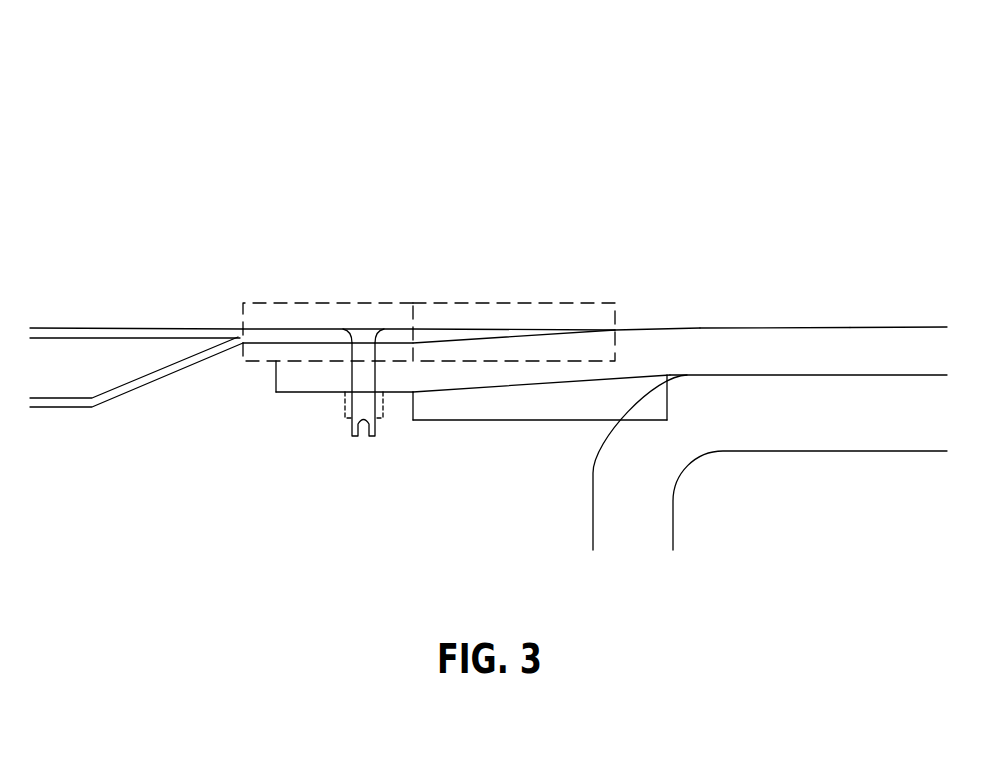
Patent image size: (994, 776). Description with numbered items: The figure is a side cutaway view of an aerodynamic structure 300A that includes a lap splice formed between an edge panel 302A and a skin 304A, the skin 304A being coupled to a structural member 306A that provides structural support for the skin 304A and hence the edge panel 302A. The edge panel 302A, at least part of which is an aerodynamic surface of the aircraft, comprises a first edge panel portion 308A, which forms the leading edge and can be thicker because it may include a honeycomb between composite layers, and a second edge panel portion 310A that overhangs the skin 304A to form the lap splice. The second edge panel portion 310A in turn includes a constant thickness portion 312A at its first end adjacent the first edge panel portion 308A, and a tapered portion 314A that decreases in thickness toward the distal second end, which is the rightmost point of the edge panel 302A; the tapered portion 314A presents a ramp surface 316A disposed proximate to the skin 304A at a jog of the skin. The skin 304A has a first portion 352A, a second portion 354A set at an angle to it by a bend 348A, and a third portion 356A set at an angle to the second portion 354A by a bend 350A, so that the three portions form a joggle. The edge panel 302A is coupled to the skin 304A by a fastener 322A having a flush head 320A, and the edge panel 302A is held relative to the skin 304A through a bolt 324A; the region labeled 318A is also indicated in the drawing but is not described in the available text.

The aerodynamic structure 300A is at (228, 86).
The edge panel 302A is at (207, 327).
The skin 304A is at (753, 327).
The structural member 306A is at (850, 452).
The first edge panel portion 308A is at (112, 380).
The second edge panel portion 310A is at (305, 327).
The constant thickness portion 312A is at (265, 362).
The tapered portion 314A is at (560, 303).
The ramp surface 316A is at (505, 340).
The bottom wall 318A is at (562, 422).
The flush head 320A is at (385, 330).
The fastener 322A is at (355, 377).
The bolt 324A is at (378, 410).
The bend 348A is at (687, 375).
The bend 350A is at (420, 394).
The first portion 352A is at (875, 352).
The second portion 354A is at (643, 345).
The third portion 356A is at (300, 377).